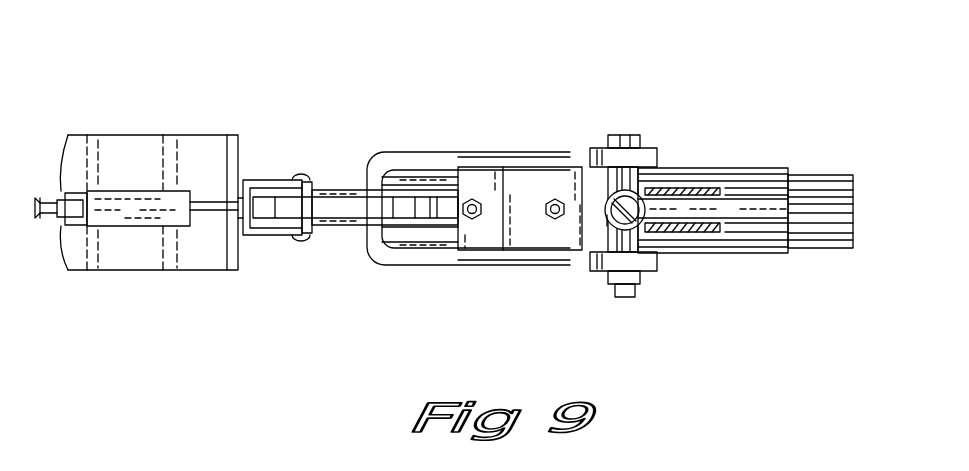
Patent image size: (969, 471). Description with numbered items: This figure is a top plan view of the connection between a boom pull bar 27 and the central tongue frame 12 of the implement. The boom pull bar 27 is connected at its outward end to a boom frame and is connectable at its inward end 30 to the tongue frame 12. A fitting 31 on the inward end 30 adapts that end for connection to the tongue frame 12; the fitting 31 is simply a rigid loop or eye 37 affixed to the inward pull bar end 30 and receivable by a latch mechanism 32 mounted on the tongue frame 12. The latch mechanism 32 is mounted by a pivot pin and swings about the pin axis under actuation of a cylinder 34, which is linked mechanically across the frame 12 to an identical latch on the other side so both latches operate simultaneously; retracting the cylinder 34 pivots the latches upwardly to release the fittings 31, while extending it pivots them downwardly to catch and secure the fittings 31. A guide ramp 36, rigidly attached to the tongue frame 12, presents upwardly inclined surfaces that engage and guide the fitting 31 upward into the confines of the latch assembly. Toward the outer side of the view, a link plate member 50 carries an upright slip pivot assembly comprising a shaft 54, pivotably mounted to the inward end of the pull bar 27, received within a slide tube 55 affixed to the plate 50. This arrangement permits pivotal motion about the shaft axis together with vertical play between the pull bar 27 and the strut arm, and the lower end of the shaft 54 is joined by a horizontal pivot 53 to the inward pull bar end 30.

The tongue frame 12 is at (182, 128).
The cylinder 34 is at (160, 200).
The latch mechanism 32 is at (336, 230).
The guide ramp 36 is at (345, 190).
The loop or eye 37 is at (405, 160).
The fitting 31 is at (522, 152).
The horizontal pivot 53 is at (622, 135).
The shaft 54 is at (643, 194).
The slide tube 55 is at (609, 222).
The inward end 30 is at (810, 182).
The link plate member 50 is at (724, 204).
The boom pull bar 27 is at (834, 170).